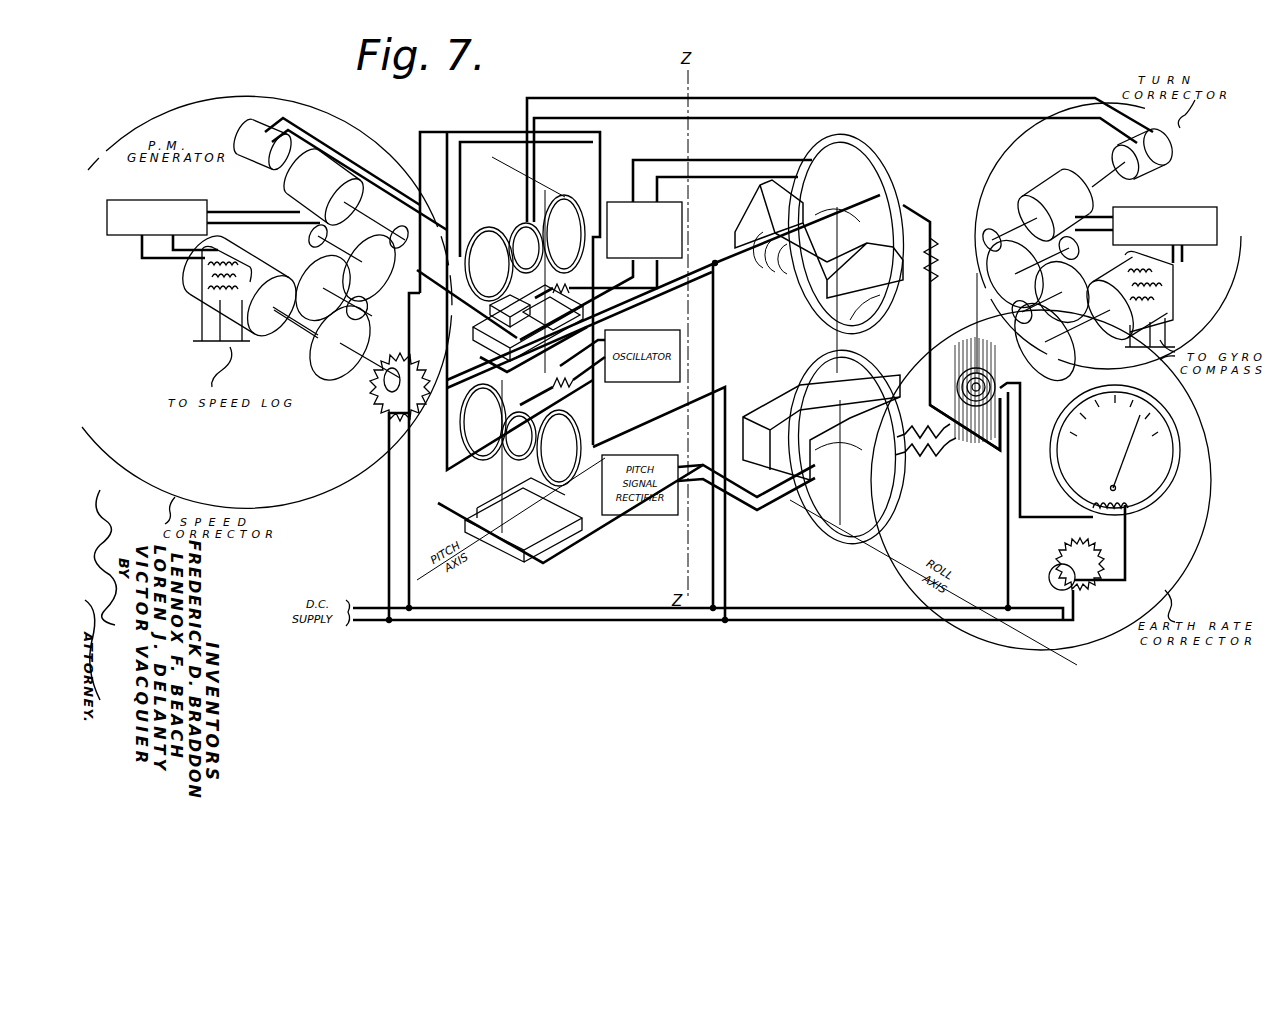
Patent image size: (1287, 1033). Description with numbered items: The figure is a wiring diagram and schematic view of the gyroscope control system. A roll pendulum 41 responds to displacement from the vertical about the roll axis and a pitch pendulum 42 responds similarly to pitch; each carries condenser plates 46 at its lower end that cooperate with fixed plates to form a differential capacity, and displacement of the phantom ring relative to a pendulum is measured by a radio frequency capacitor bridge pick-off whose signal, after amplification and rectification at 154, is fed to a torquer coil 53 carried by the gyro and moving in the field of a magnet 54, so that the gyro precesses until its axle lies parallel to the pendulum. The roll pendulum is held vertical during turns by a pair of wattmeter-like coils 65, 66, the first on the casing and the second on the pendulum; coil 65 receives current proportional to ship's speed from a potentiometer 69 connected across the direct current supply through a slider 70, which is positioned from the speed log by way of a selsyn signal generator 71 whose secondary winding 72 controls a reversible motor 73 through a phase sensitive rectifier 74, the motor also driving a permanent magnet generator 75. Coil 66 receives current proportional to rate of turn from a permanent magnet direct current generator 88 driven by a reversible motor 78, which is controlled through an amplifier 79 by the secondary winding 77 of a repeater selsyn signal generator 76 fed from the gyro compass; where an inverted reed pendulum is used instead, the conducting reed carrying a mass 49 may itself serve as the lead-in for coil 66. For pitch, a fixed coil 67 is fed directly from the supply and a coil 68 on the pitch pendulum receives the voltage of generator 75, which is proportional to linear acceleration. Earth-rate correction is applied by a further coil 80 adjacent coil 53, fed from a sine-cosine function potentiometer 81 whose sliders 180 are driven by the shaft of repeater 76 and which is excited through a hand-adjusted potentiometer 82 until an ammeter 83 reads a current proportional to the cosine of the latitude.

The roll pendulum 41 is at (515, 182).
The pitch pendulum 42 is at (475, 520).
The condenser plates 46 is at (490, 350).
The mass 49 is at (568, 293).
The coil 53 is at (812, 158).
The magnet 54 is at (755, 212).
The coil 65 is at (485, 228).
The coil 66 is at (493, 313).
The coil 67 is at (460, 450).
The coil 68 is at (505, 462).
The potentiometer 69 is at (372, 400).
The slider 70 is at (385, 418).
The selsyn signal generator 71 is at (275, 330).
The secondary winding 72 is at (233, 257).
The reversible motor 73 is at (290, 185).
The phase sensitive rectifier 74 is at (160, 198).
The permanent magnet generator 75 is at (240, 137).
The repeater selsyn signal generator 76 is at (1120, 275).
The secondary winding 77 is at (1178, 272).
The reversible motor 78 is at (1055, 180).
The amplifier 79 is at (1195, 200).
The coil 80 is at (880, 152).
The sine-cosine function potentiometer 81 is at (965, 345).
The potentiometer 82 is at (1090, 552).
The ammeter 83 is at (1170, 485).
The permanent magnet direct current generator 88 is at (1170, 155).
The amplification and rectification stage 154 is at (612, 202).
The sliders 180 is at (966, 430).